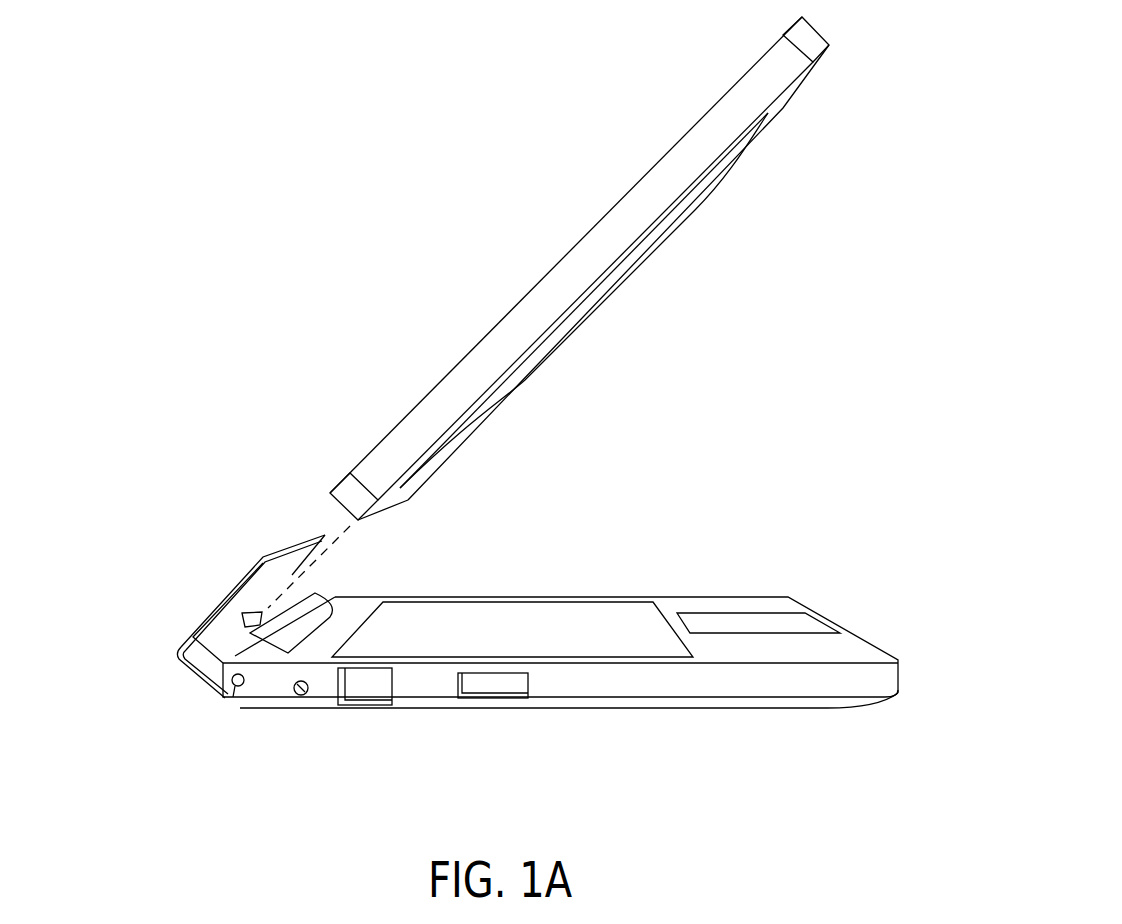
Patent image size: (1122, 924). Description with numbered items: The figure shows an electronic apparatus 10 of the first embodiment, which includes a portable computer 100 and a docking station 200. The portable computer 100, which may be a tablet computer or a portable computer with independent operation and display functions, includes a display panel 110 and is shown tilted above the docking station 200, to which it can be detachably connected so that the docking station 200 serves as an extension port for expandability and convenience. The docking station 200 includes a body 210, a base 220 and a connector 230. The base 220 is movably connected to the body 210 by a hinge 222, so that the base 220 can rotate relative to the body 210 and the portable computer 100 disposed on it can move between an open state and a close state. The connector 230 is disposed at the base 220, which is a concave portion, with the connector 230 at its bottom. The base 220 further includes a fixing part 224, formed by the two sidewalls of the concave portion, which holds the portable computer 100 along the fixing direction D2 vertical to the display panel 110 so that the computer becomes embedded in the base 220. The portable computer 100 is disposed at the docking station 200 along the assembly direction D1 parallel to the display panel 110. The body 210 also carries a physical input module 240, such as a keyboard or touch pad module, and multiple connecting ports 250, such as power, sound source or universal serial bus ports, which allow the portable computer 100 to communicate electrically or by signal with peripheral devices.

The electronic apparatus 10 is at (862, 397).
The portable computer 100 is at (588, 268).
The display panel 110 is at (696, 203).
The docking station 200 is at (124, 659).
The body 210 is at (580, 700).
The base 220 is at (177, 652).
The hinge 222 is at (239, 700).
The fixing part 224 is at (303, 610).
The connector 230 is at (246, 617).
The physical input module 240 is at (712, 618).
The connecting ports 250 is at (477, 689).
The assembly direction D1 is at (351, 455).
The fixing direction D2 is at (209, 609).